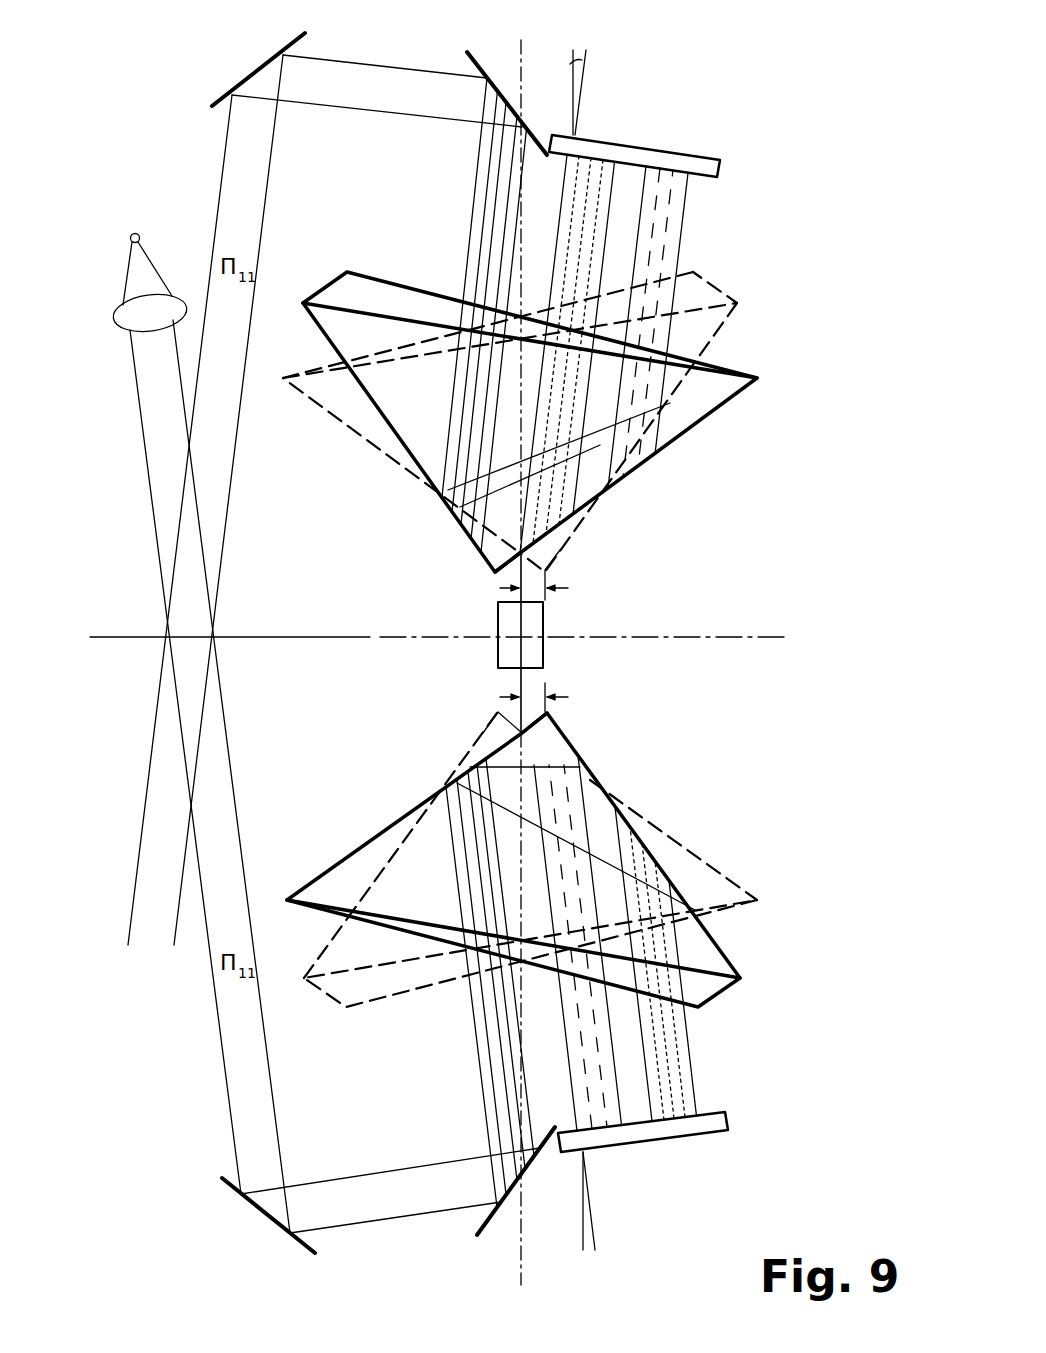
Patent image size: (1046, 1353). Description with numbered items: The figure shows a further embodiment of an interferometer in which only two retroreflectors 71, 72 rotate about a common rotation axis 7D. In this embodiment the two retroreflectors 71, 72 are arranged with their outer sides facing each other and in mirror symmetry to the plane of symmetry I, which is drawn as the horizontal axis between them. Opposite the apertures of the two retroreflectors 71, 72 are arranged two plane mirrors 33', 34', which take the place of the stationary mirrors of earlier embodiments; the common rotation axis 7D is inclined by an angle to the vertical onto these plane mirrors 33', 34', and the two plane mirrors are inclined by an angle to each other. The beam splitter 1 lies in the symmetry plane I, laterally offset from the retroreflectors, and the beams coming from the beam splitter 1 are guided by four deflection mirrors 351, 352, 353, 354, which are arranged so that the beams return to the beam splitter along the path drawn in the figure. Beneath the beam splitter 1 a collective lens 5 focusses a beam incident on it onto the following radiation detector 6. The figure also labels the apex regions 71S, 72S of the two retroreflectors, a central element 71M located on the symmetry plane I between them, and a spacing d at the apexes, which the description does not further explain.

The beam splitter 1 is at (112, 640).
The collective lens 5 is at (122, 320).
The radiation detector 6 is at (130, 236).
The common rotation axis 7D is at (521, 656).
The plane mirror 33' is at (652, 291).
The plane mirror 34' is at (666, 1003).
The deflection mirror 351 is at (305, 40).
The deflection mirror 352 is at (262, 1215).
The deflection mirror 353 is at (467, 55).
The deflection mirror 354 is at (490, 1218).
The retroreflector 71 is at (697, 382).
The retroreflector 72 is at (745, 972).
The prism apex face 71S is at (493, 574).
The prism apex face 72S is at (495, 712).
The central element 71M is at (536, 628).
The symmetry plane I is at (801, 636).
The apex width d is at (534, 643).